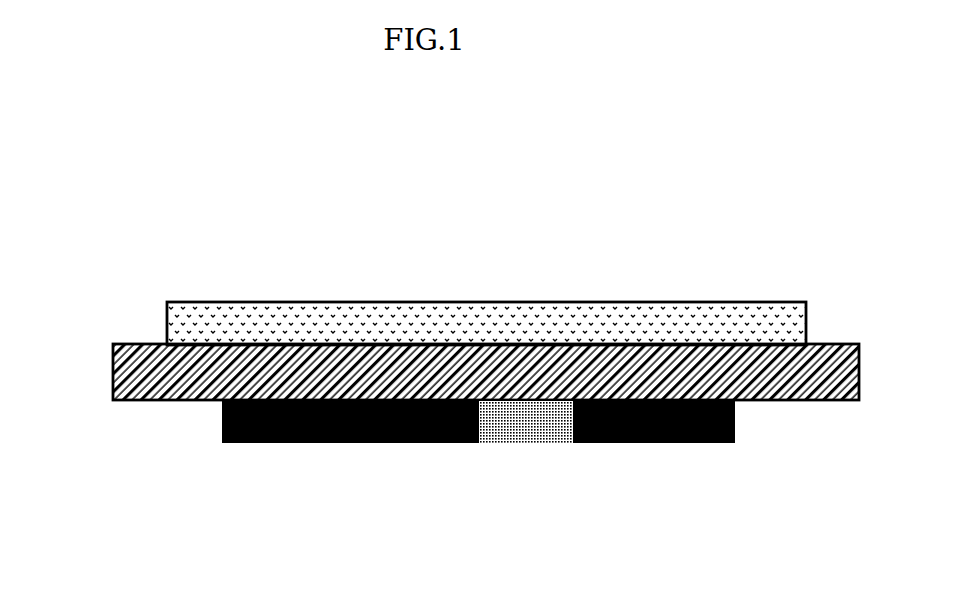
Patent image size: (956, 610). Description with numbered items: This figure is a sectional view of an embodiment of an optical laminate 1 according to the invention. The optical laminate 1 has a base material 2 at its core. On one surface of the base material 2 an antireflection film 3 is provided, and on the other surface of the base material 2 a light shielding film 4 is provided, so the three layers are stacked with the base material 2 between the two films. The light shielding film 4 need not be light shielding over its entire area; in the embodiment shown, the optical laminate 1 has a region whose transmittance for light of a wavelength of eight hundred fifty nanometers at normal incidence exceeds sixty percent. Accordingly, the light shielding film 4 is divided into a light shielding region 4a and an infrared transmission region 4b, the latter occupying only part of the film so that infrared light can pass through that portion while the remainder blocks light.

The optical laminate 1 is at (574, 243).
The base material 2 is at (148, 344).
The antireflection film 3 is at (350, 302).
The light shielding film 4 is at (221, 420).
The light shielding region 4a is at (337, 443).
The infrared transmission region 4b is at (513, 443).